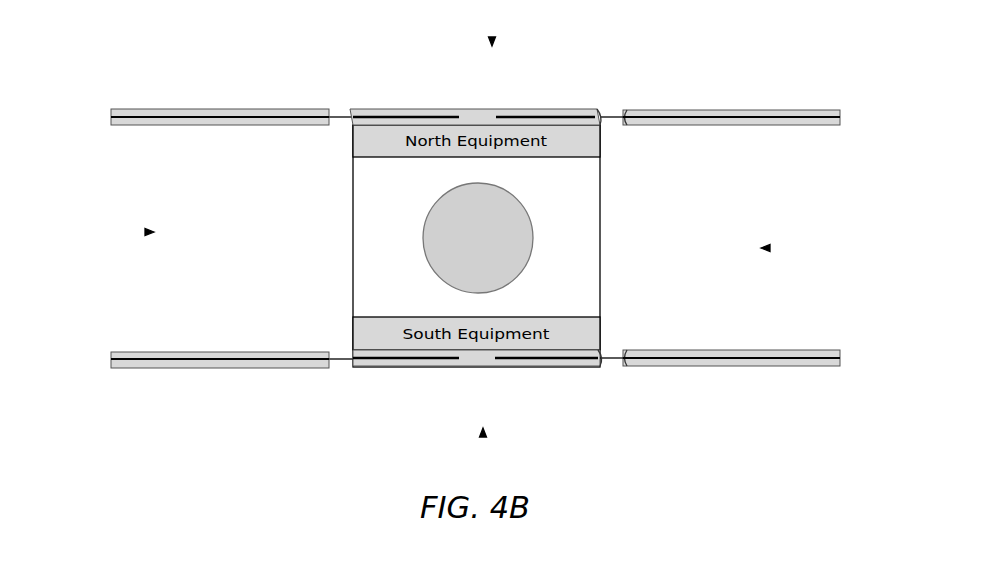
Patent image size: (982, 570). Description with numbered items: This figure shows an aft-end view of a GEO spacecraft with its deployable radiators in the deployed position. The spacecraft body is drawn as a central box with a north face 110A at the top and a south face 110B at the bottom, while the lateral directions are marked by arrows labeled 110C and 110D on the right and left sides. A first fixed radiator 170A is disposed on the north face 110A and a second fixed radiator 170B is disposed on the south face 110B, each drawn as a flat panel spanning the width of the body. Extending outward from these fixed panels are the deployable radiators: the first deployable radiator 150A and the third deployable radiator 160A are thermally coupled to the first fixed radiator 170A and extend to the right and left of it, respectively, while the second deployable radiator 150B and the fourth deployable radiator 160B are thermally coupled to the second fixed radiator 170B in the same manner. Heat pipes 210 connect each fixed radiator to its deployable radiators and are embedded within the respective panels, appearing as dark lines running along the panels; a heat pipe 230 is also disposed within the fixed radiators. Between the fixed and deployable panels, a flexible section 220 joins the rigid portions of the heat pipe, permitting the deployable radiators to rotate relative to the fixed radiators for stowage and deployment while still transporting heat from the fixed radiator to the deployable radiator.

The north face 110A is at (492, 46).
The south face 110B is at (483, 428).
The east direction 110C is at (761, 248).
The west direction 110D is at (154, 232).
The first deployable radiator 150A is at (756, 104).
The second deployable radiator 150B is at (713, 373).
The third deployable radiator 160A is at (181, 108).
The fourth deployable radiator 160B is at (187, 372).
The first fixed radiator 170A is at (371, 108).
The second fixed radiator 170B is at (400, 372).
The heat pipe 210 is at (786, 120).
The flexible section 220 is at (605, 114).
The heat pipe 230 is at (542, 110).